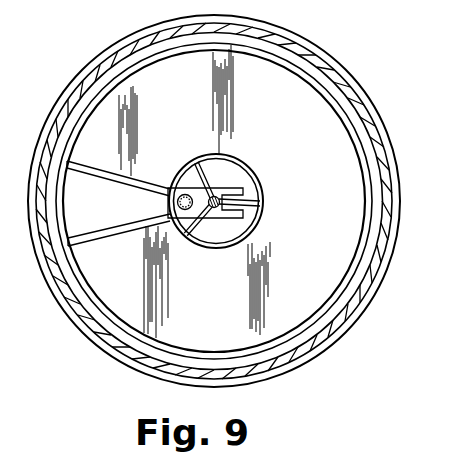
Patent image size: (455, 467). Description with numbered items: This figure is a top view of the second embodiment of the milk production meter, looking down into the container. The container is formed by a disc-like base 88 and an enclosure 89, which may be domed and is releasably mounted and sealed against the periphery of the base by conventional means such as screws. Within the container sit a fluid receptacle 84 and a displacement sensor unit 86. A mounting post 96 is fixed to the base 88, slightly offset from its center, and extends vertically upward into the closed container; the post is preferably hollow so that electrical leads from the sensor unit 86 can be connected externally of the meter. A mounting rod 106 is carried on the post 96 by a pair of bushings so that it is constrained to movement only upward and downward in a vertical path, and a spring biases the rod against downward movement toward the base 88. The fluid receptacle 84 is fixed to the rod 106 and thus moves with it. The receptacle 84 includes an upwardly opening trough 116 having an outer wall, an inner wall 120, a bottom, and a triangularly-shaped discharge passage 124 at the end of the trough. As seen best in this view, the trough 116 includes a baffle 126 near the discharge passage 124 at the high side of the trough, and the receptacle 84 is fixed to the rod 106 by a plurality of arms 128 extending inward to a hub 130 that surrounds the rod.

The fluid receptacle 84 is at (300, 139).
The displacement sensor unit 86 is at (236, 212).
The disc-like base 88 is at (63, 310).
The enclosure 89 is at (357, 103).
The mounting post 96 is at (171, 202).
The mounting rod 106 is at (216, 212).
The trough 116 is at (340, 246).
The inner wall 120 is at (196, 158).
The discharge passage 124 is at (121, 227).
The baffle 126 is at (81, 163).
The arms 128 is at (251, 194).
The hub 130 is at (220, 196).